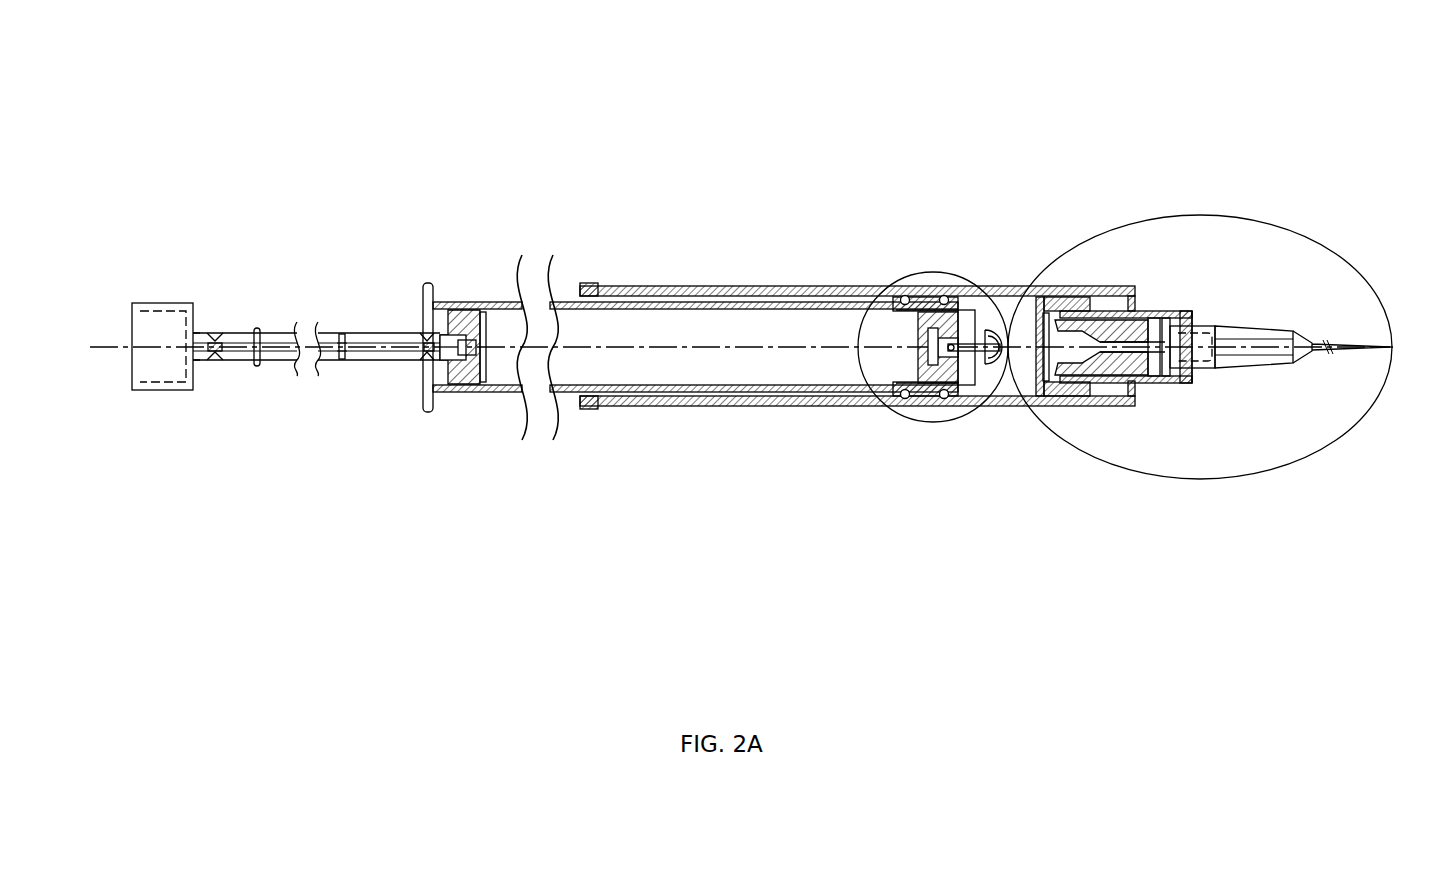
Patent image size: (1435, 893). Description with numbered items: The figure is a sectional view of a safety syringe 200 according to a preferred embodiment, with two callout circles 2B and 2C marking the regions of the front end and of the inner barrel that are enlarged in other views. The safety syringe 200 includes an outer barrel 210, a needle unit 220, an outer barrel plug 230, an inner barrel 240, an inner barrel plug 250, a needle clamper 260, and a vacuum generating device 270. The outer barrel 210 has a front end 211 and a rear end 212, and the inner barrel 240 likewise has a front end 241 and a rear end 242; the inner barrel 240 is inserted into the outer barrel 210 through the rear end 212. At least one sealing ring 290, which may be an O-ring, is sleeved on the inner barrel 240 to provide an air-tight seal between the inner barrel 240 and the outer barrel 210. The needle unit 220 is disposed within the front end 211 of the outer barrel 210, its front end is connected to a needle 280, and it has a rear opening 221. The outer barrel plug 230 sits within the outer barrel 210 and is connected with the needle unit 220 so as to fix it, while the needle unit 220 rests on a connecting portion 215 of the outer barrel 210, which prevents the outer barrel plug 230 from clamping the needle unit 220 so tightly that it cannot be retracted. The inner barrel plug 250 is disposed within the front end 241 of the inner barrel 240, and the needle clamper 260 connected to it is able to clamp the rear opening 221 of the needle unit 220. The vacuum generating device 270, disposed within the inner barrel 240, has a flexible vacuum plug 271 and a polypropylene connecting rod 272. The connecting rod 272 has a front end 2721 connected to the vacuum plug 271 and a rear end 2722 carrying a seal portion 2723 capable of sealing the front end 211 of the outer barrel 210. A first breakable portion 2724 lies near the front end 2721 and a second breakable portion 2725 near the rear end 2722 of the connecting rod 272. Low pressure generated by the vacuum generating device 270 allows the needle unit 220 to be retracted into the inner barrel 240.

The safety syringe 200 is at (195, 146).
The outer barrel 210 is at (712, 290).
The front end 211 is at (1168, 290).
The rear end 212 is at (605, 293).
The connecting portion 215 is at (1098, 400).
The needle unit 220 is at (1155, 405).
The rear opening 221 is at (1040, 400).
The outer barrel plug 230 is at (1040, 290).
The inner barrel 240 is at (668, 393).
The front end 241 is at (963, 400).
The rear end 242 is at (425, 410).
The inner barrel plug 250 is at (937, 290).
The needle clamper 260 is at (1008, 393).
The vacuum generating device 270 is at (480, 202).
The vacuum plug 271 is at (462, 308).
The connecting rod 272 is at (357, 338).
The front end 2721 is at (497, 398).
The rear end 2722 is at (190, 388).
The seal portion 2723 is at (137, 380).
The first breakable portion 2724 is at (452, 352).
The second breakable portion 2725 is at (218, 335).
The needle 280 is at (1243, 355).
The sealing ring 290 is at (892, 404).
The detail view 2B is at (1312, 240).
The detail view 2C is at (960, 275).